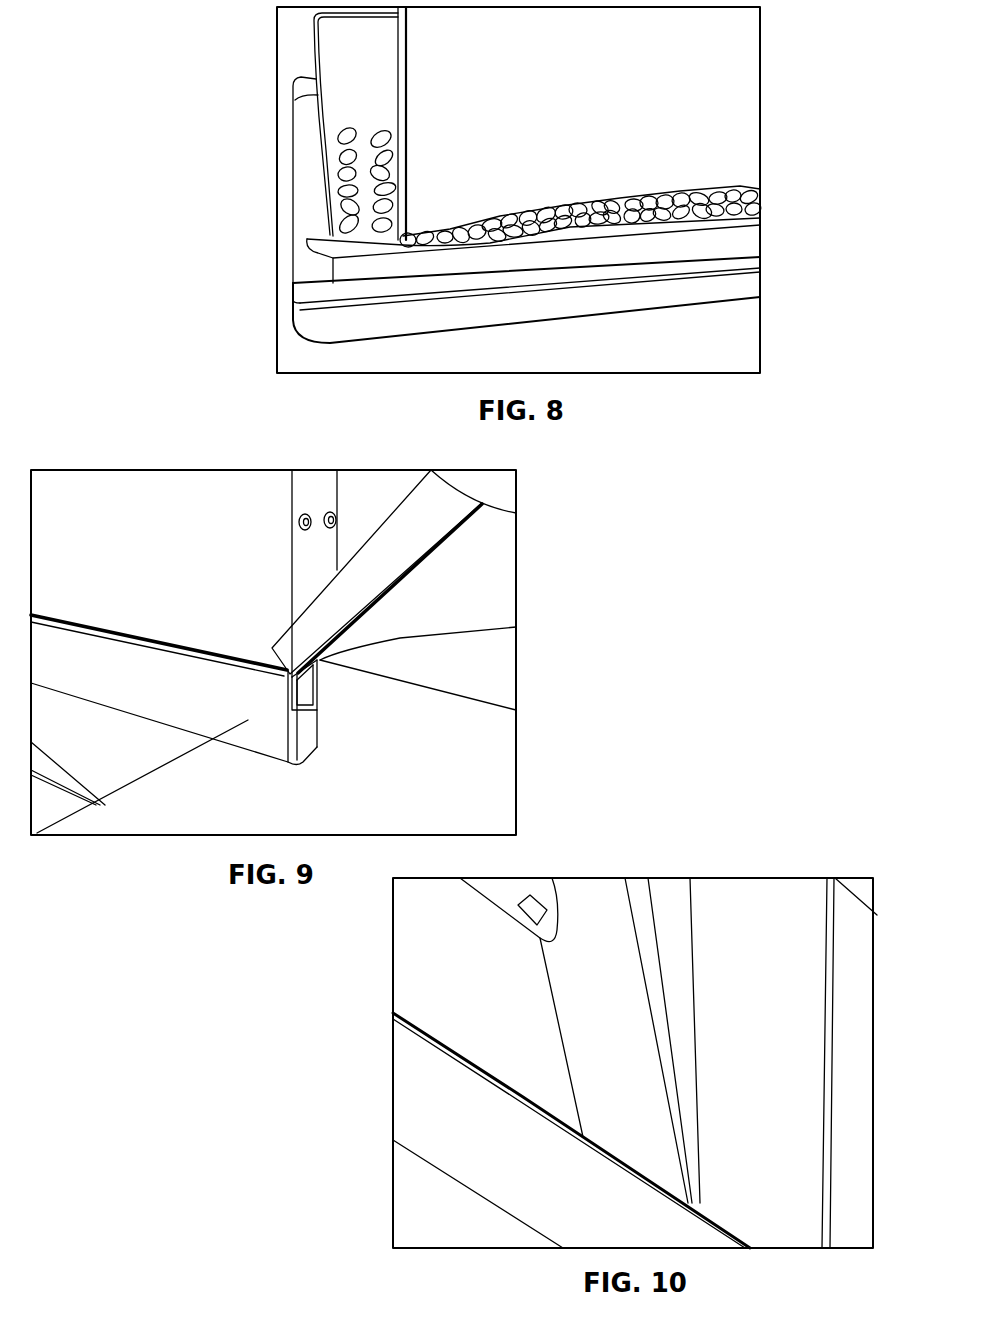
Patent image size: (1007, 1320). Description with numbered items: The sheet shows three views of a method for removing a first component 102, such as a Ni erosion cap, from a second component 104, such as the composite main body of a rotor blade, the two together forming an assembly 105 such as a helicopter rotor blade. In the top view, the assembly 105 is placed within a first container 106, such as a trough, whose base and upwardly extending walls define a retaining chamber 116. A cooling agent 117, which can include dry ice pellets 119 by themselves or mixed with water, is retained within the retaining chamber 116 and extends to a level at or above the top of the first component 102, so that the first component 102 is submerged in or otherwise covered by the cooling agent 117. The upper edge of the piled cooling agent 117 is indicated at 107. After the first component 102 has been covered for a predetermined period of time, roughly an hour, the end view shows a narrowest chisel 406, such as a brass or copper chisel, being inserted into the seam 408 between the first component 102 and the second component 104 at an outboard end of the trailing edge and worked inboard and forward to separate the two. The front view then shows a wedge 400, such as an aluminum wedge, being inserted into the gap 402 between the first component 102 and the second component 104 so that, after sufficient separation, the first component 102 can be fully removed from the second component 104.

In FIG. 9, the first component 102 is at (248, 720).
In FIG. 10, the first component 102 is at (552, 1197).
In FIG. 8, the second component 104 is at (747, 85).
In FIG. 9, the second component 104 is at (268, 508).
In FIG. 10, the second component 104 is at (782, 920).
In FIG. 8, the assembly 105 is at (783, 37).
In FIG. 8, the first container 106 is at (284, 335).
In FIG. 8, the top edge of media pile 107 is at (757, 173).
In FIG. 8, the retaining chamber 116 is at (365, 118).
In FIG. 8, the cooling agent 117 is at (743, 203).
In FIG. 8, the dry ice pellets 119 is at (690, 195).
In FIG. 10, the wedge 400 is at (625, 938).
In FIG. 10, the gap 402 is at (700, 1203).
In FIG. 9, the chisel 406 is at (425, 537).
In FIG. 9, the seam 408 is at (323, 655).